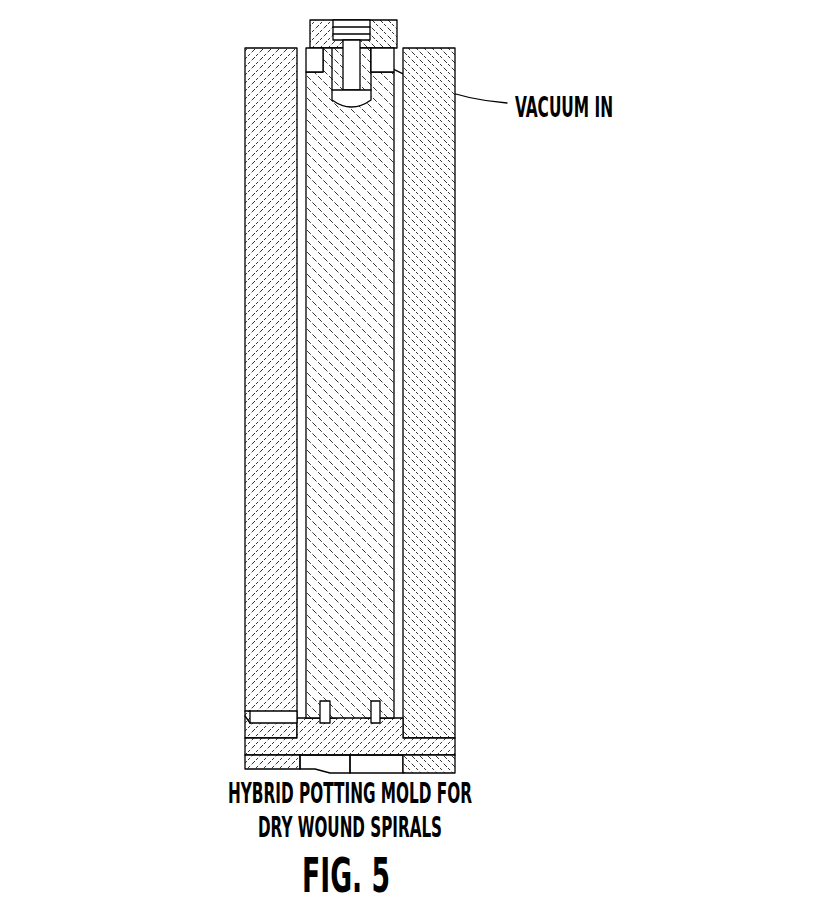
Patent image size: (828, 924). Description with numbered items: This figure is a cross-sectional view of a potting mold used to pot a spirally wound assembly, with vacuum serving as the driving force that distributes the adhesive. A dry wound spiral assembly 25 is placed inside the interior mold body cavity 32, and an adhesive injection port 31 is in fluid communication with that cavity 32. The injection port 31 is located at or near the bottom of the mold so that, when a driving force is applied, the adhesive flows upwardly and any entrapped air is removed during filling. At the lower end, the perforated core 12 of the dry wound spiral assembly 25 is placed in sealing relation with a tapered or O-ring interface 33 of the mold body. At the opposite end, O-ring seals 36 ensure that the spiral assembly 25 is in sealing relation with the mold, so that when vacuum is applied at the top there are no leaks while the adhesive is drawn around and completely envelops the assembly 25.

The perforated core 12 is at (494, 117).
The dry wound spiral assembly 25 is at (377, 177).
The adhesive injection port 31 is at (250, 712).
The interior mold body cavity 32 is at (438, 271).
The tapered or O-ring interface 33 is at (383, 712).
The O-ring seals 36 is at (365, 73).